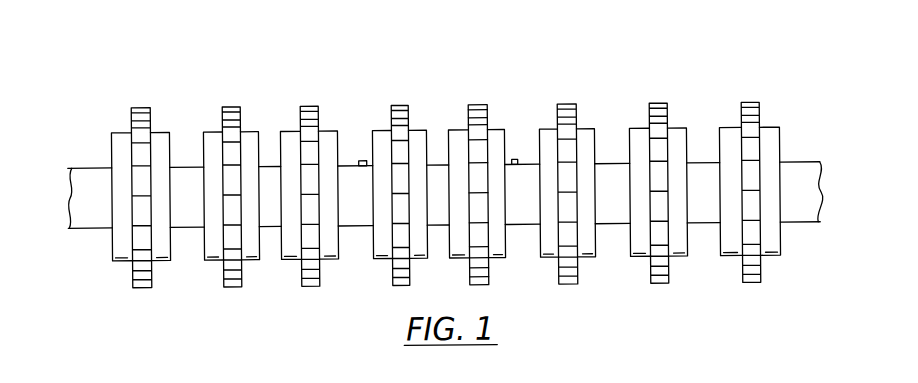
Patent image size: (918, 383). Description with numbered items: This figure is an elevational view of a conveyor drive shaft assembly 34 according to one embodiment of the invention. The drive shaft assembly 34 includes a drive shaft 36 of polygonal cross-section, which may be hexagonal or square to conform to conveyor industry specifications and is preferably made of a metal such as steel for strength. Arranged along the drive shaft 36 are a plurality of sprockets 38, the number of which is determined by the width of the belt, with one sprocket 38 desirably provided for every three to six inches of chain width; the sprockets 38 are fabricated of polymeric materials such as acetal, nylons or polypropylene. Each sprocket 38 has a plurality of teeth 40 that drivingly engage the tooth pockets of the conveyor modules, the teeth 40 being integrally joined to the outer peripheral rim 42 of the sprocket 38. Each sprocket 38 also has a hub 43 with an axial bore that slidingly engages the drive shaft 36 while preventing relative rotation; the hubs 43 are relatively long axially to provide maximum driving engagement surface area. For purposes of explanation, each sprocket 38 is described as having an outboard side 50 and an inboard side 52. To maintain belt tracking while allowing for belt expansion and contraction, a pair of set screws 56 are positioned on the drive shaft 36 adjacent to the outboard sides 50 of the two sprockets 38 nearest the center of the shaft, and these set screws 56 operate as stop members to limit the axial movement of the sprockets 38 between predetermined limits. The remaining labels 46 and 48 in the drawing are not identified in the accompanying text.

The drive shaft assembly 34 is at (690, 95).
The drive shaft 36 is at (800, 164).
The sprocket 38 is at (400, 193).
The teeth 40 is at (617, 168).
The outer peripheral rim 42 is at (152, 107).
The hub 43 is at (168, 131).
The sprocket 46 is at (401, 105).
The sprocket teeth 48 is at (484, 106).
The outboard side 50 is at (372, 259).
The inboard side 52 is at (449, 257).
The set screws 56 is at (360, 160).